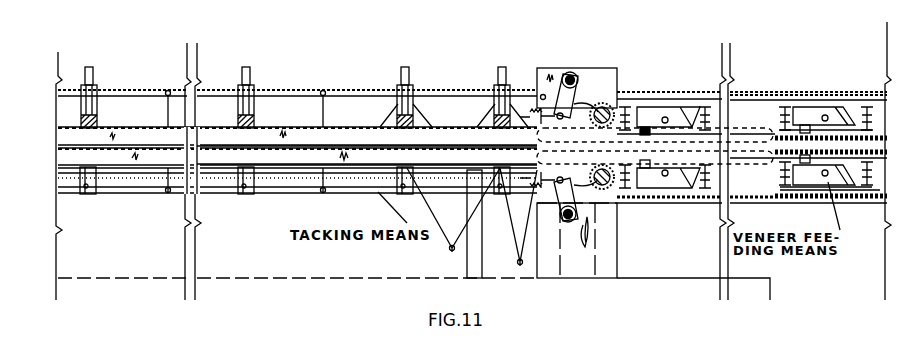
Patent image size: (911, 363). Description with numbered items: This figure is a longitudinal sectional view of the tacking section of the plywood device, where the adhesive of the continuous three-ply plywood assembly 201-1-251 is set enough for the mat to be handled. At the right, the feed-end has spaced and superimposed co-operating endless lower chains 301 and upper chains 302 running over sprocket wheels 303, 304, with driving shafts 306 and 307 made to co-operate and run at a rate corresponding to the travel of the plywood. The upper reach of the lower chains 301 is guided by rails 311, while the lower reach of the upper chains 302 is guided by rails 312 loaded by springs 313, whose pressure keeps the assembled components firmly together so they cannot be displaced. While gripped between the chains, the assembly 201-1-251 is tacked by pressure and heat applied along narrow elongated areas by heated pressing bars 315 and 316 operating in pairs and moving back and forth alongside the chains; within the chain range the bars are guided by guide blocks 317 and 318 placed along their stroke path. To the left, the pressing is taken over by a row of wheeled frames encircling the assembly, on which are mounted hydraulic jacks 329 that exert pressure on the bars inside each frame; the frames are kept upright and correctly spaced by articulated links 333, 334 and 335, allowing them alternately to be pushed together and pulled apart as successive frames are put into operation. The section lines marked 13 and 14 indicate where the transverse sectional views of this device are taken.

The hydraulic jacks 329 is at (91, 79).
The articulated link 333 is at (277, 92).
The articulated link 334 is at (362, 91).
The articulated link 335 is at (322, 118).
The upper pressing bars 316 is at (433, 133).
The sprocket wheel 304 is at (573, 97).
The sprocket wheel 303 is at (606, 105).
The driving shaft 306 is at (615, 112).
The driving shaft 307 is at (612, 190).
The upper chains 302 is at (780, 93).
The guide blocks 318 is at (823, 113).
The rails 312 is at (877, 138).
The rails 311 is at (880, 152).
The springs 313 is at (765, 147).
The lower chains 301 is at (797, 195).
The guide blocks 317 is at (828, 182).
The plywood assembly 201-1-251 is at (292, 147).
The lower pressing bars 315 is at (378, 152).
The section line 14 is at (292, 48).
The section line 13 is at (667, 48).